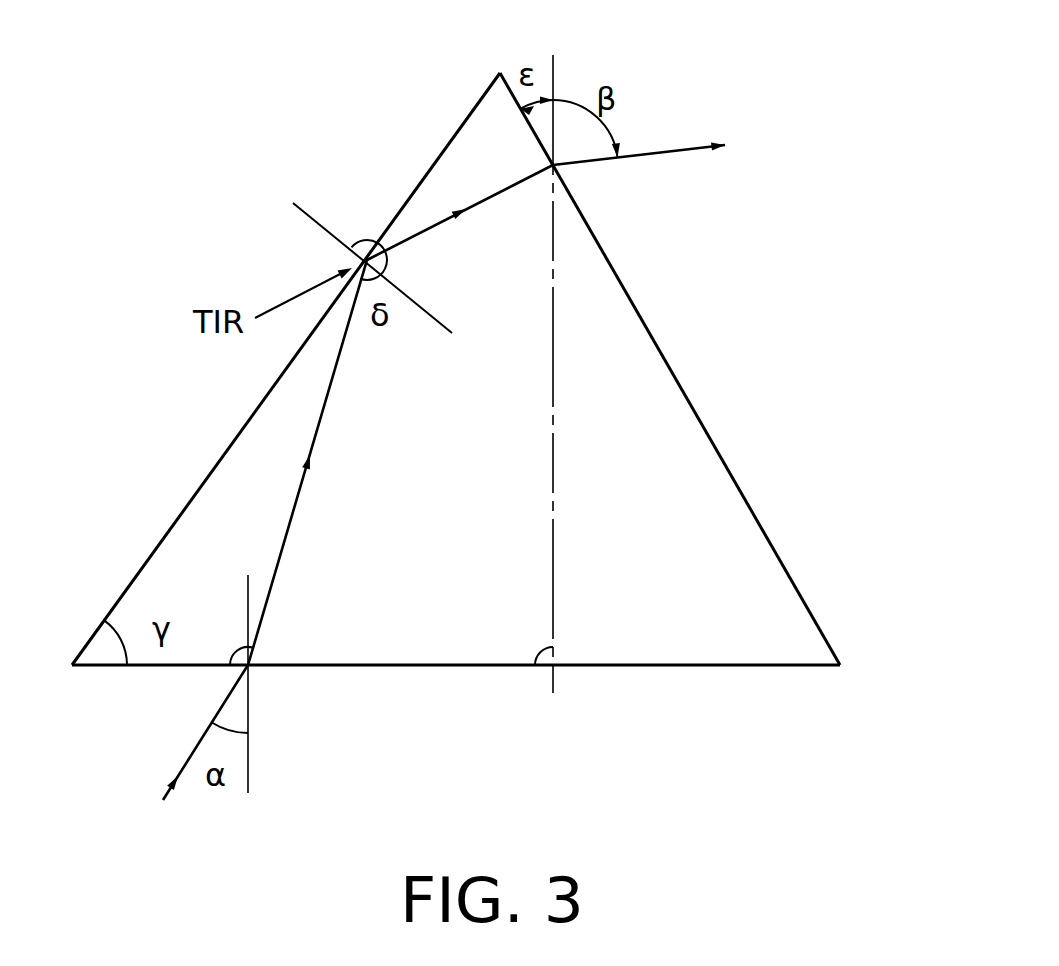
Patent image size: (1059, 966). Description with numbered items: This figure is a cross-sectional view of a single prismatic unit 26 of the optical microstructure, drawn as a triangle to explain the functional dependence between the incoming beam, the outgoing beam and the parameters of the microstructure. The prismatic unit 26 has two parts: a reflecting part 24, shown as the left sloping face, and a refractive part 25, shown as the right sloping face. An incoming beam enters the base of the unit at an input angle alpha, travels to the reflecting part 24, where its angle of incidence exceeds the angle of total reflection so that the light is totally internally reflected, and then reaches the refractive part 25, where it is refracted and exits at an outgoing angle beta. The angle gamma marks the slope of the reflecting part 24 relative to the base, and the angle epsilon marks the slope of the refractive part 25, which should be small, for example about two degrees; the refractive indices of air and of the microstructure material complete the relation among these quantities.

The reflecting part 24 is at (428, 157).
The refractive part 25 is at (676, 302).
The prismatic unit 26 is at (680, 72).